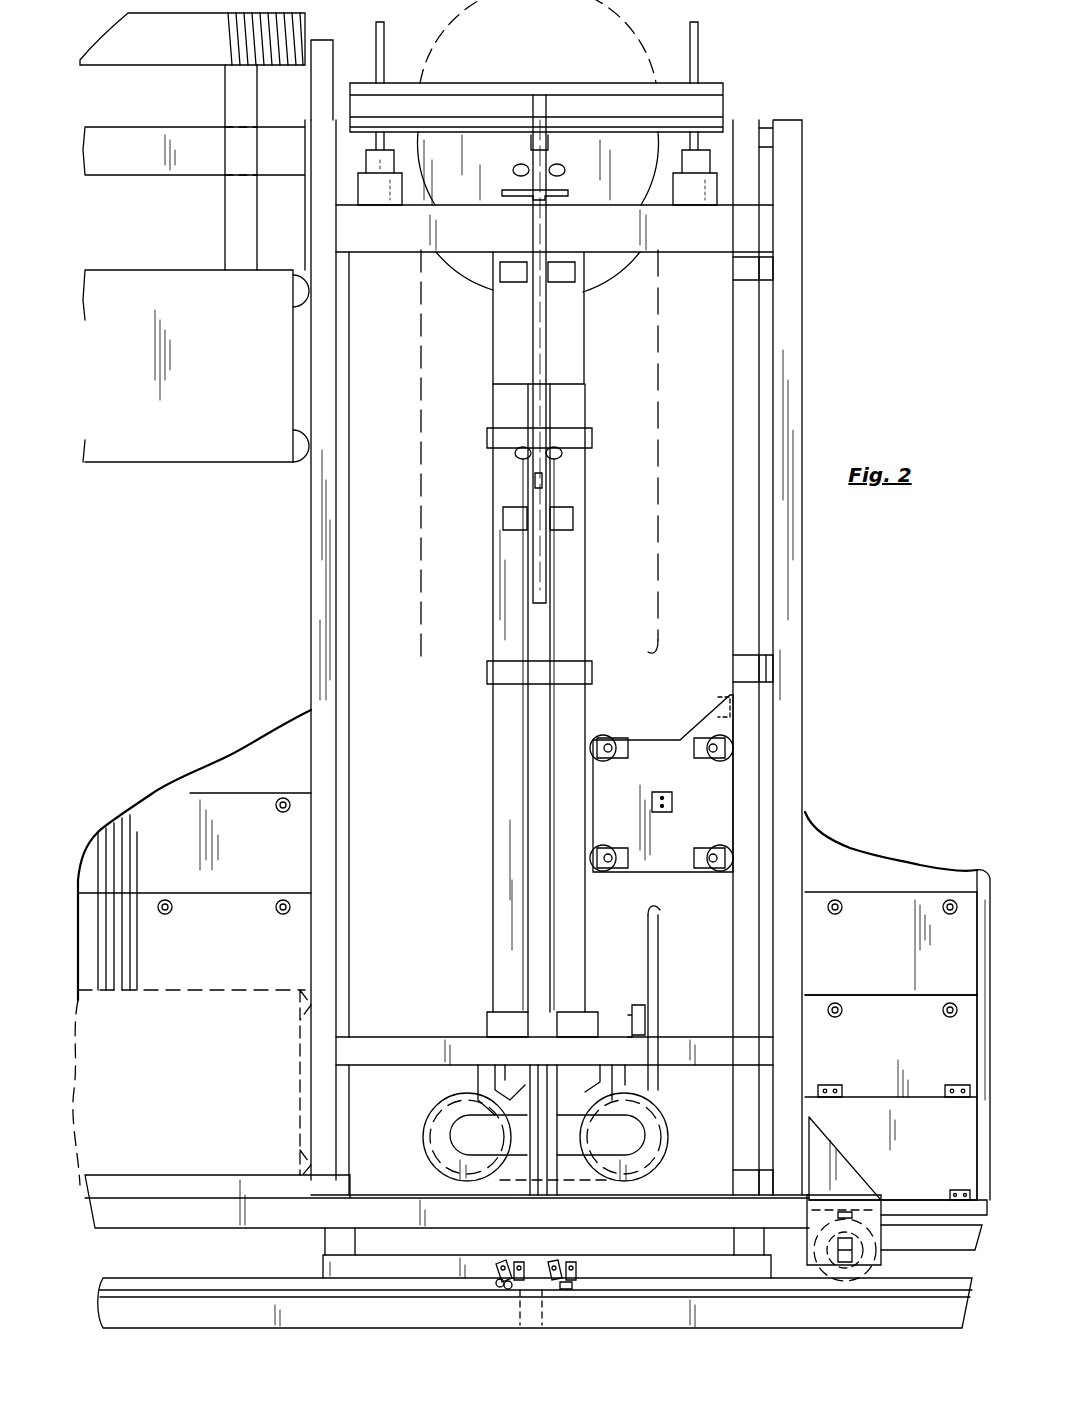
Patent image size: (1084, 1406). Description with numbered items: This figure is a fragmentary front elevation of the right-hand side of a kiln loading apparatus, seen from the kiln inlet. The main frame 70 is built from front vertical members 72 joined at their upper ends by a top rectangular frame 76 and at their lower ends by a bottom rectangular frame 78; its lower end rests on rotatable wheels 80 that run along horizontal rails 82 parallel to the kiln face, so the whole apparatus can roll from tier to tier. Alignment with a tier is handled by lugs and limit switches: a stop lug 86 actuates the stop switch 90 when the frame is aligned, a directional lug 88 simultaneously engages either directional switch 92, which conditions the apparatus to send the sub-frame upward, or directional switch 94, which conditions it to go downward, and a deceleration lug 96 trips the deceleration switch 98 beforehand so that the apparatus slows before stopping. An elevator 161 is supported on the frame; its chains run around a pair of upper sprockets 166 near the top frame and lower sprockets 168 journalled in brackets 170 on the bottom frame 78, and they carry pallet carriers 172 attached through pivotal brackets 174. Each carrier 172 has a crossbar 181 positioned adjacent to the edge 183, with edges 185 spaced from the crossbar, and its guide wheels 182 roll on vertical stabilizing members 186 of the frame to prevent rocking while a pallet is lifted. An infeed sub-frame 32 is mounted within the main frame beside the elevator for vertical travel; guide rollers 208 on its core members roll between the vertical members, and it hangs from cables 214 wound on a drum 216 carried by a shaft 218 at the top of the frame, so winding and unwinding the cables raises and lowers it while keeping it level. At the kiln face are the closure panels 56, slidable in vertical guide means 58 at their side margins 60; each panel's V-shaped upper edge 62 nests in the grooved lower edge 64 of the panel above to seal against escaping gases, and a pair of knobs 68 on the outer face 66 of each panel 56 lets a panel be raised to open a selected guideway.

The infeed sub-frame 32 is at (170, 450).
The panel 56 is at (187, 797).
The vertical guide means 58 is at (311, 857).
The side margins 60 is at (808, 935).
The upper edge 62 is at (858, 896).
The lower edge 64 is at (868, 992).
The outer face 66 is at (894, 1126).
The knobs 68 is at (172, 910).
The main frame 70 is at (800, 120).
The front vertical members 72 is at (311, 505).
The top rectangular frame 76 is at (381, 240).
The bottom rectangular frame 78 is at (375, 1047).
The rotatable wheels 80 is at (845, 1282).
The rails 82 is at (333, 1310).
The stop lug 86 is at (564, 1290).
The directional lug 88 is at (500, 1287).
The stop switch 90 is at (574, 1264).
The directional switch 92 is at (500, 1266).
The directional switch 94 is at (518, 1262).
The deceleration lug 96 is at (531, 1300).
The deceleration switch 98 is at (556, 1262).
The elevator 161 is at (819, 356).
The sprockets 166 is at (470, 270).
The sprocket 168 is at (652, 1142).
The brackets 170 is at (660, 462).
The pallet carrier 172 is at (656, 742).
The pivotal brackets 174 is at (672, 802).
The crossbar 181 is at (720, 698).
The guide wheels 182 is at (608, 738).
The edge 183 is at (733, 772).
The edges 185 is at (598, 782).
The vertical stabilizing members 186 is at (580, 545).
The guide roller 208 is at (296, 312).
The cables 214 is at (222, 204).
The drum 216 is at (157, 52).
The shaft 218 is at (330, 40).